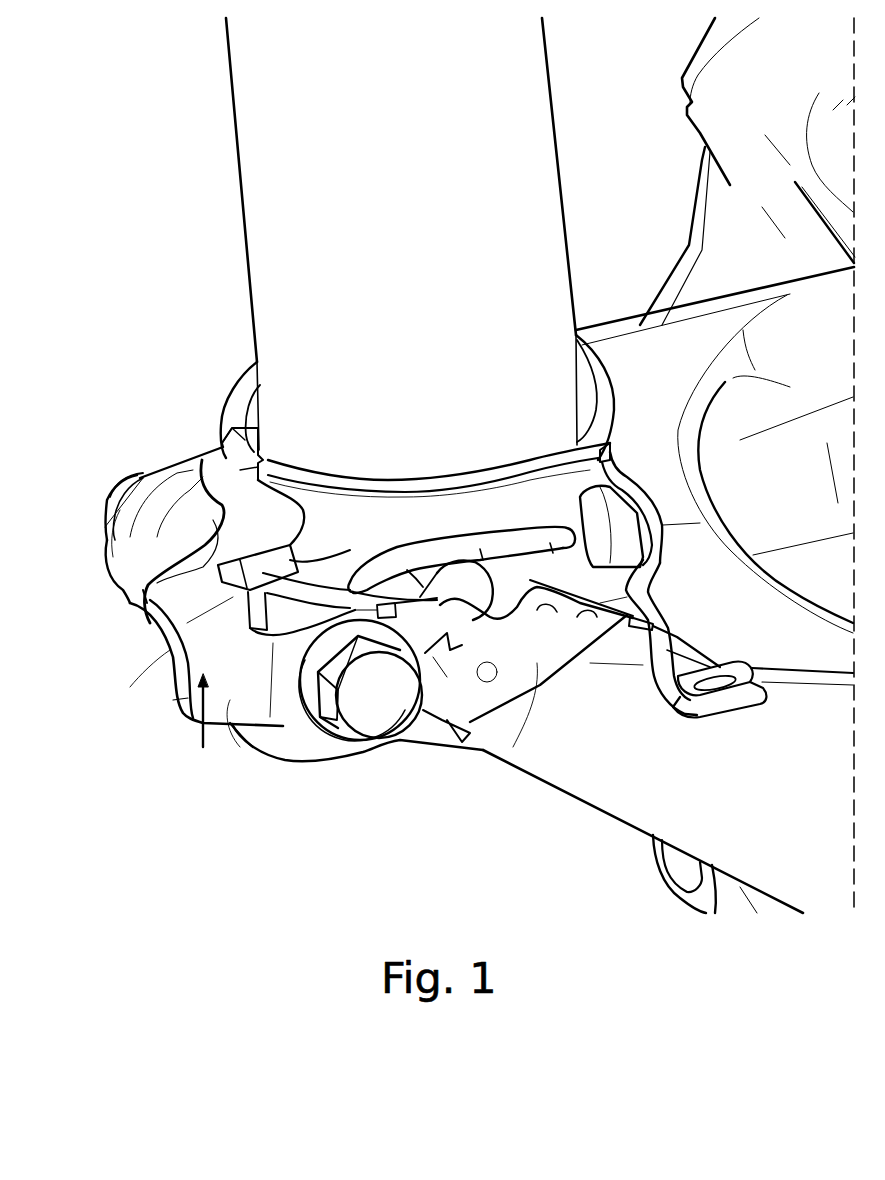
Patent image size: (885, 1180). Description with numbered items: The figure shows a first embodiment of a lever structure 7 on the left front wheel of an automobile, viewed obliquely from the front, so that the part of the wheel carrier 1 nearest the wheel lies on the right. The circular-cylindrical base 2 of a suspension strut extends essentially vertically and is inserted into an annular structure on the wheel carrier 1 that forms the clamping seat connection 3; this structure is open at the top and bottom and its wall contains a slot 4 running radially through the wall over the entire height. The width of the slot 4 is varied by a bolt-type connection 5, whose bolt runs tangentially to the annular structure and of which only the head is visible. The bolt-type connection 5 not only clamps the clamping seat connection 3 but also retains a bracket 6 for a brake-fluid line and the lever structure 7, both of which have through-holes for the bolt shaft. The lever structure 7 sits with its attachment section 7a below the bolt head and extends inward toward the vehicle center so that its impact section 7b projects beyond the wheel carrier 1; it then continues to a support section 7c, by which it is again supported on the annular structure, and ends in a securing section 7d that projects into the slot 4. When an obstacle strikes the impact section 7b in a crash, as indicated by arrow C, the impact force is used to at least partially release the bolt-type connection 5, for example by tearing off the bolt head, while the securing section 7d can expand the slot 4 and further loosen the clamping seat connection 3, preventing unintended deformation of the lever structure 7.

The wheel carrier 1 is at (642, 795).
The base of a suspension strut 2 is at (263, 172).
The clamping seat connection 3 is at (387, 517).
The slot 4 is at (227, 447).
The bolt-type connection 5 is at (378, 718).
The bracket 6 is at (560, 660).
The lever structure 7 is at (228, 735).
The attachment section 7a is at (283, 720).
The impact section 7b is at (197, 653).
The support section 7c is at (192, 498).
The securing section 7d is at (222, 442).
The arrow indicating impact force C is at (202, 735).